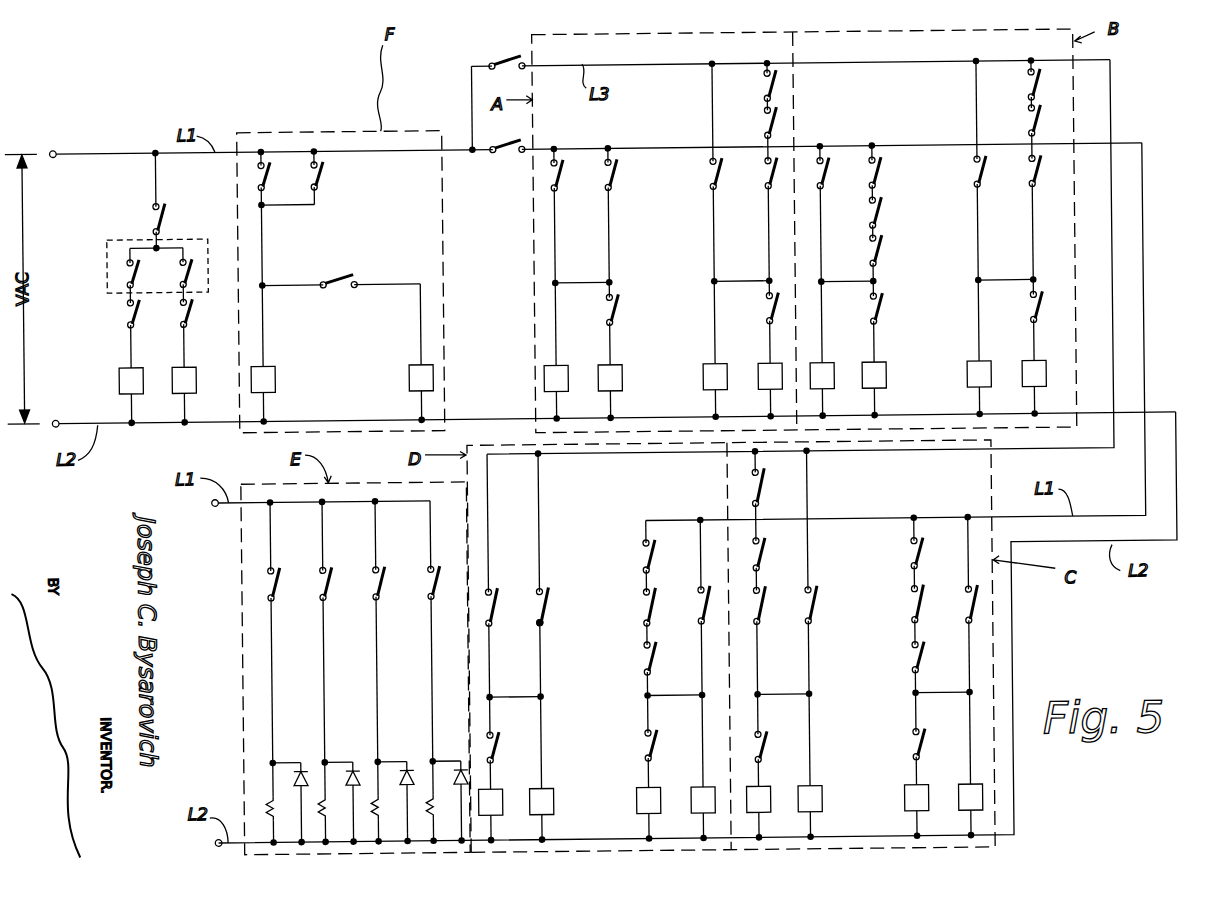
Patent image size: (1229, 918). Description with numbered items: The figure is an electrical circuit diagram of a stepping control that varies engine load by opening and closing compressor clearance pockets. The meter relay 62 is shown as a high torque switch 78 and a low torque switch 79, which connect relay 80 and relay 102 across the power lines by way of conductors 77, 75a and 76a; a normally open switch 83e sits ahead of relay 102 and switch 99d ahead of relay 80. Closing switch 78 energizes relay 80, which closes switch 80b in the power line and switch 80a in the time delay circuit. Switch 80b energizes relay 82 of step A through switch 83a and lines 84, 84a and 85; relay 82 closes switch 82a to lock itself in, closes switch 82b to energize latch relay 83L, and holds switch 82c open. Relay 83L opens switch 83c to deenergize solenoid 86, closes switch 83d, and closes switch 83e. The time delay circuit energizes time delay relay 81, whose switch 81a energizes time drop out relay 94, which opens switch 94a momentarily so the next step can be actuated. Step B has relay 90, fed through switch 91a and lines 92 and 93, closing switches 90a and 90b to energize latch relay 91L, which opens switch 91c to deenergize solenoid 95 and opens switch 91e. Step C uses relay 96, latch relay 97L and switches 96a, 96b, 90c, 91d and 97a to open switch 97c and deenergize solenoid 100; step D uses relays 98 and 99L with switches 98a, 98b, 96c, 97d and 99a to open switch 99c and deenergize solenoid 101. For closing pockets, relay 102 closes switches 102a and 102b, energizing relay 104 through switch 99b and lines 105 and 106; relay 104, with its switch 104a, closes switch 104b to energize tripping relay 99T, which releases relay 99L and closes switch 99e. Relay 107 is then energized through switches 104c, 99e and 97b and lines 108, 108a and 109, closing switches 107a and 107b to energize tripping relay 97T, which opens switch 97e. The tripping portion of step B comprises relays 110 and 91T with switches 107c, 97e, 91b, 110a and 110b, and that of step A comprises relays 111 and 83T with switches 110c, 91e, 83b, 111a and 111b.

The meter relay 62 is at (112, 237).
The conductor 77 is at (143, 241).
The high torque switch 78 is at (130, 270).
The low torque switch 79 is at (188, 257).
The relay 80 is at (121, 378).
The switch 80a is at (285, 179).
The switch 80b is at (506, 157).
The time delay relay 81 is at (276, 375).
The switch 81a is at (333, 260).
The relay 82 is at (567, 365).
The switch 82a is at (574, 191).
The switch 82b is at (622, 305).
The switch 82c is at (881, 166).
The latch-type relay 83L is at (624, 368).
The tripping relay 83T is at (759, 380).
The switch 83a is at (621, 171).
The switch 83b is at (773, 179).
The switch 83c is at (266, 580).
The switch 83d is at (885, 207).
The normally open switch 83e is at (192, 309).
The line 84 is at (613, 232).
The line 84a is at (584, 282).
The line 85 is at (558, 300).
The solenoid 86 is at (267, 800).
The relay 90 is at (835, 368).
The switch 90a is at (829, 166).
The switch 90b is at (885, 295).
The switch 90c is at (911, 561).
The latch relay 91L is at (889, 368).
The tripping relay 91T is at (1024, 368).
The switch 91a is at (885, 246).
The switch 91b is at (1043, 172).
The switch 91c is at (319, 580).
The switch 91d is at (911, 603).
The switch 91e is at (766, 122).
The line 92 is at (844, 284).
The line 93 is at (824, 293).
The time drop out relay 94 is at (410, 374).
The switch 94a is at (155, 200).
The solenoid 95 is at (319, 800).
The relay 96 is at (979, 801).
The switch 96a is at (973, 612).
The switch 96b is at (910, 751).
The switch 96c is at (641, 554).
The latch relay 97L is at (899, 803).
The tripping relay 97T is at (767, 792).
The switch 97a is at (910, 671).
The switch 97b is at (766, 607).
The switch 97c is at (372, 581).
The switch 97d is at (644, 608).
The switch 97e is at (1028, 122).
The relay 98 is at (687, 800).
The switch 98a is at (699, 605).
The switch 98b is at (645, 745).
The latch relay 99L is at (633, 802).
The tripping relay 99T is at (494, 787).
The switch 99a is at (644, 660).
The switch 99b is at (496, 582).
The switch 99c is at (427, 581).
The switch 99d is at (123, 312).
The switch 99e is at (761, 554).
The solenoid 100 is at (372, 800).
The solenoid 101 is at (427, 800).
The relay 102 is at (197, 378).
The switch 102a is at (512, 48).
The switch 102b is at (328, 167).
The relay 104 is at (551, 797).
The switch 104a is at (546, 582).
The switch 104b is at (497, 745).
The switch 104c is at (760, 486).
The line 105 is at (510, 693).
The line 106 is at (539, 714).
The relay 107 is at (819, 800).
The switch 107a is at (810, 610).
The switch 107b is at (759, 747).
The switch 107c is at (1029, 86).
The line 108 is at (756, 652).
The line 108a is at (783, 696).
The line 109 is at (809, 707).
The relay 110 is at (970, 375).
The switch 110a is at (988, 169).
The switch 110b is at (1033, 304).
The switch 110c is at (768, 86).
The relay 111 is at (705, 381).
The switch 111a is at (713, 177).
The switch 111b is at (759, 317).
The conductor 75a is at (129, 343).
The conductor 76a is at (186, 330).